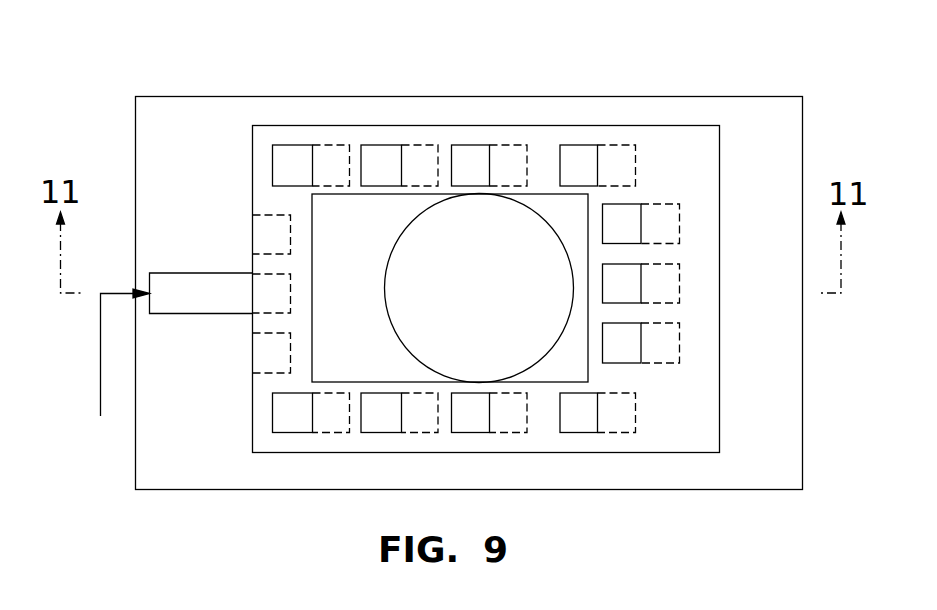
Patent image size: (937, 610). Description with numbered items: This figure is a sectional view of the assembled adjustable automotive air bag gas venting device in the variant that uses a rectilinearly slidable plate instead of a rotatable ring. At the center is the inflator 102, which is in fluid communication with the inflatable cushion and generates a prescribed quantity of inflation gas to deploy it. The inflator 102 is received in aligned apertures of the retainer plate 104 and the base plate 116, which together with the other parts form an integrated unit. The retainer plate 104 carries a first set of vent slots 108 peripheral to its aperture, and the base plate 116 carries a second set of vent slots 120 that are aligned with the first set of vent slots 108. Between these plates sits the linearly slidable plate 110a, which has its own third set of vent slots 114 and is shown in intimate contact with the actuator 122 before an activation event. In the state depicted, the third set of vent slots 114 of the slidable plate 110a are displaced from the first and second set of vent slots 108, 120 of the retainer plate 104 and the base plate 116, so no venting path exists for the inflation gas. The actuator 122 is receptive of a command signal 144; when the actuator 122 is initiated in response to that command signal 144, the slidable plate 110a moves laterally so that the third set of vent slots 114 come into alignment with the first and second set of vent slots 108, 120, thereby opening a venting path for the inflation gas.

The inflator 102 is at (408, 223).
The retainer plate 104 is at (501, 253).
The base plate 116 is at (804, 128).
The first set of vent slots 108 is at (695, 369).
The second set of vent slots 120 is at (679, 283).
The linearly slidable plate 110a is at (606, 453).
The third set of vent slots 114 is at (274, 412).
The actuator 122 is at (168, 273).
The command signal 144 is at (100, 362).